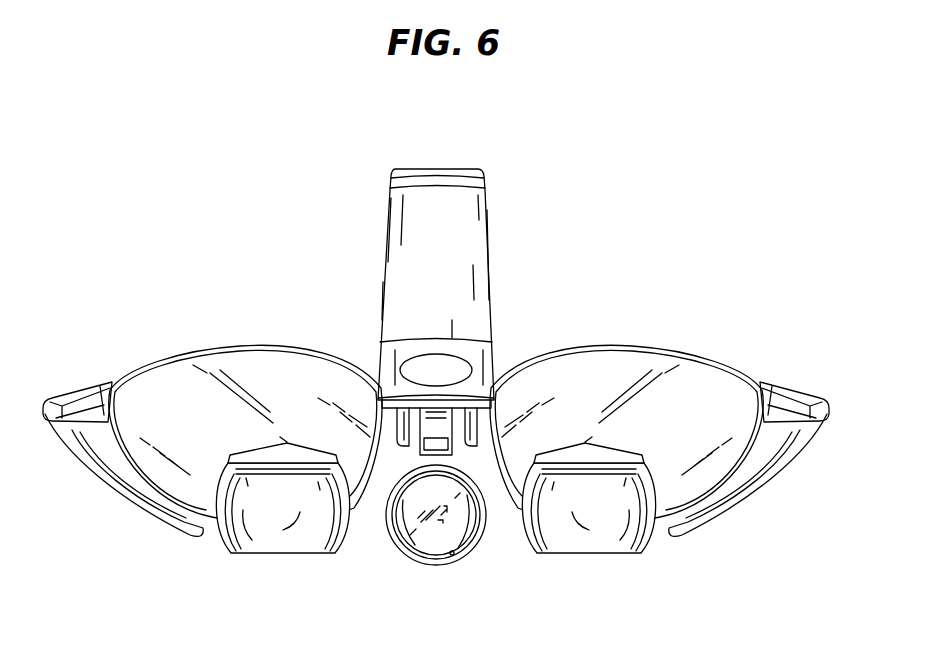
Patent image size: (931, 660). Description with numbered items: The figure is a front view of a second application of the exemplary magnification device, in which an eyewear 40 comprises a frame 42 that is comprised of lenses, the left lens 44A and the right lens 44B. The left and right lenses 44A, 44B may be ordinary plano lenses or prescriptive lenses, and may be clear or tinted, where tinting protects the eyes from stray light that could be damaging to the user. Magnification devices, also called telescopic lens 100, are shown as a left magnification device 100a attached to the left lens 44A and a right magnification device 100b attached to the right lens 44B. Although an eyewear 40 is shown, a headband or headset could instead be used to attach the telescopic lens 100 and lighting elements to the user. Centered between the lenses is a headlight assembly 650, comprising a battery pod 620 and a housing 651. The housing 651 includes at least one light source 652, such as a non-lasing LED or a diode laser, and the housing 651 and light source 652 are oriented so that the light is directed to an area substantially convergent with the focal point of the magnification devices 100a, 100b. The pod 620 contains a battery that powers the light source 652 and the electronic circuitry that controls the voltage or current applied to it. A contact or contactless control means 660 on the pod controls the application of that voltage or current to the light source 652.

The eyewear 40 is at (436, 397).
The frame 42 is at (621, 344).
The left lens 44A is at (143, 387).
The right lens 44B is at (723, 386).
The telescopic lens 100 is at (439, 531).
The magnification device 100a is at (277, 546).
The magnification device 100b is at (594, 546).
The pod 620 is at (470, 244).
The headlight assembly 650 is at (388, 330).
The housing 651 is at (464, 556).
The light source 652 is at (432, 522).
The control means 660 is at (472, 370).